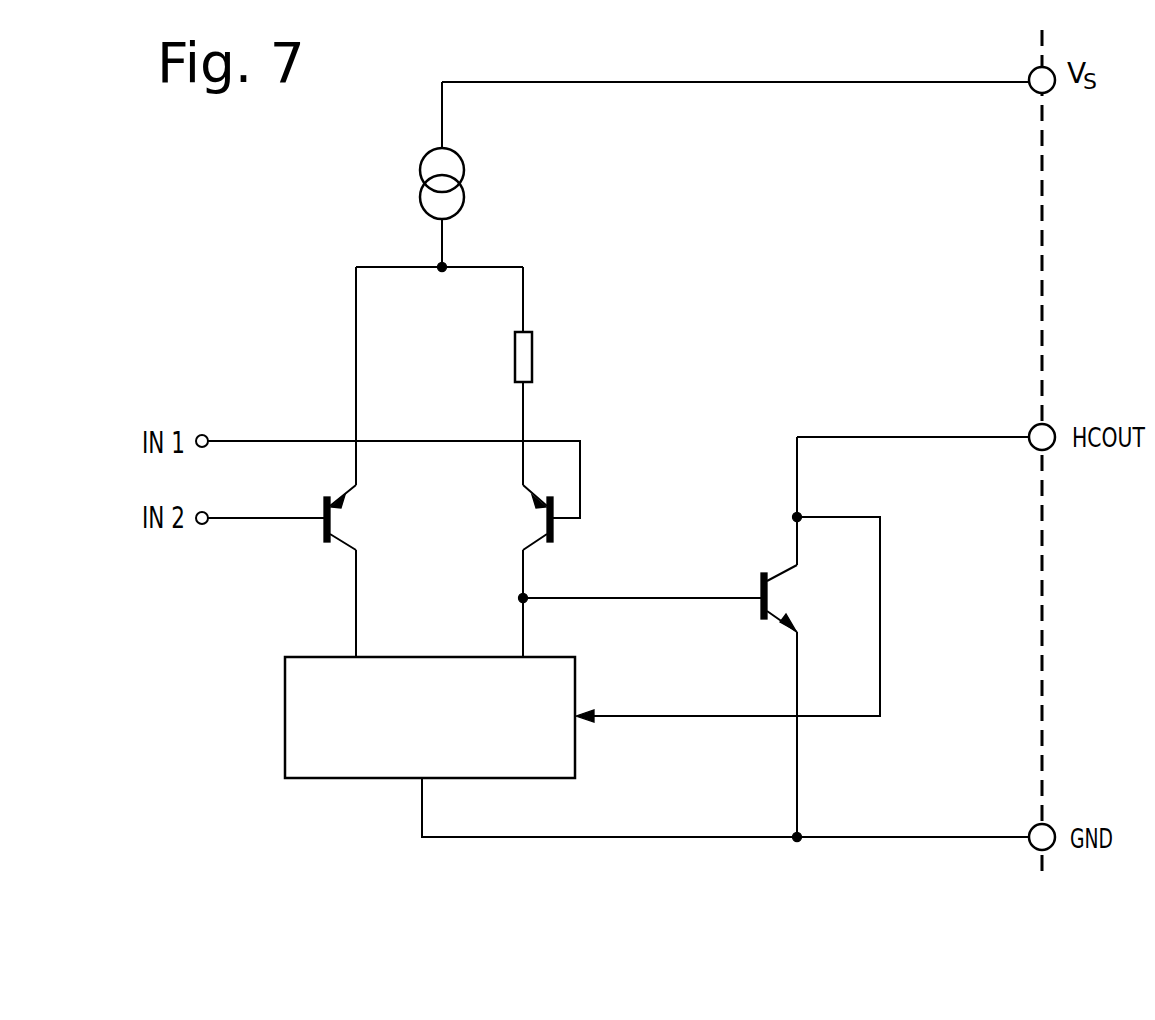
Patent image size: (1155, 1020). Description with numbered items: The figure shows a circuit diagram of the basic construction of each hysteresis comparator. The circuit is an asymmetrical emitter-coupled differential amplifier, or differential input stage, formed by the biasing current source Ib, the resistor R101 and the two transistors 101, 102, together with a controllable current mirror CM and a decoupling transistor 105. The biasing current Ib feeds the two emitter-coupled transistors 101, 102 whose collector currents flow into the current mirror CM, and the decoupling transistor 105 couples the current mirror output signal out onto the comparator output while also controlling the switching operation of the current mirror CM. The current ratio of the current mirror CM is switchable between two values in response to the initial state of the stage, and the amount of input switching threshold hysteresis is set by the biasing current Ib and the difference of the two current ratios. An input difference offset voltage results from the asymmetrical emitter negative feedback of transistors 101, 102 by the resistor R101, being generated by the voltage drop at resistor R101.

The transistor 101 is at (360, 571).
The transistor 102 is at (512, 571).
The decoupling transistor 105 is at (796, 637).
The resistor R101 is at (557, 357).
The biasing current Ib is at (465, 183).
The controllable current mirror CM is at (406, 720).